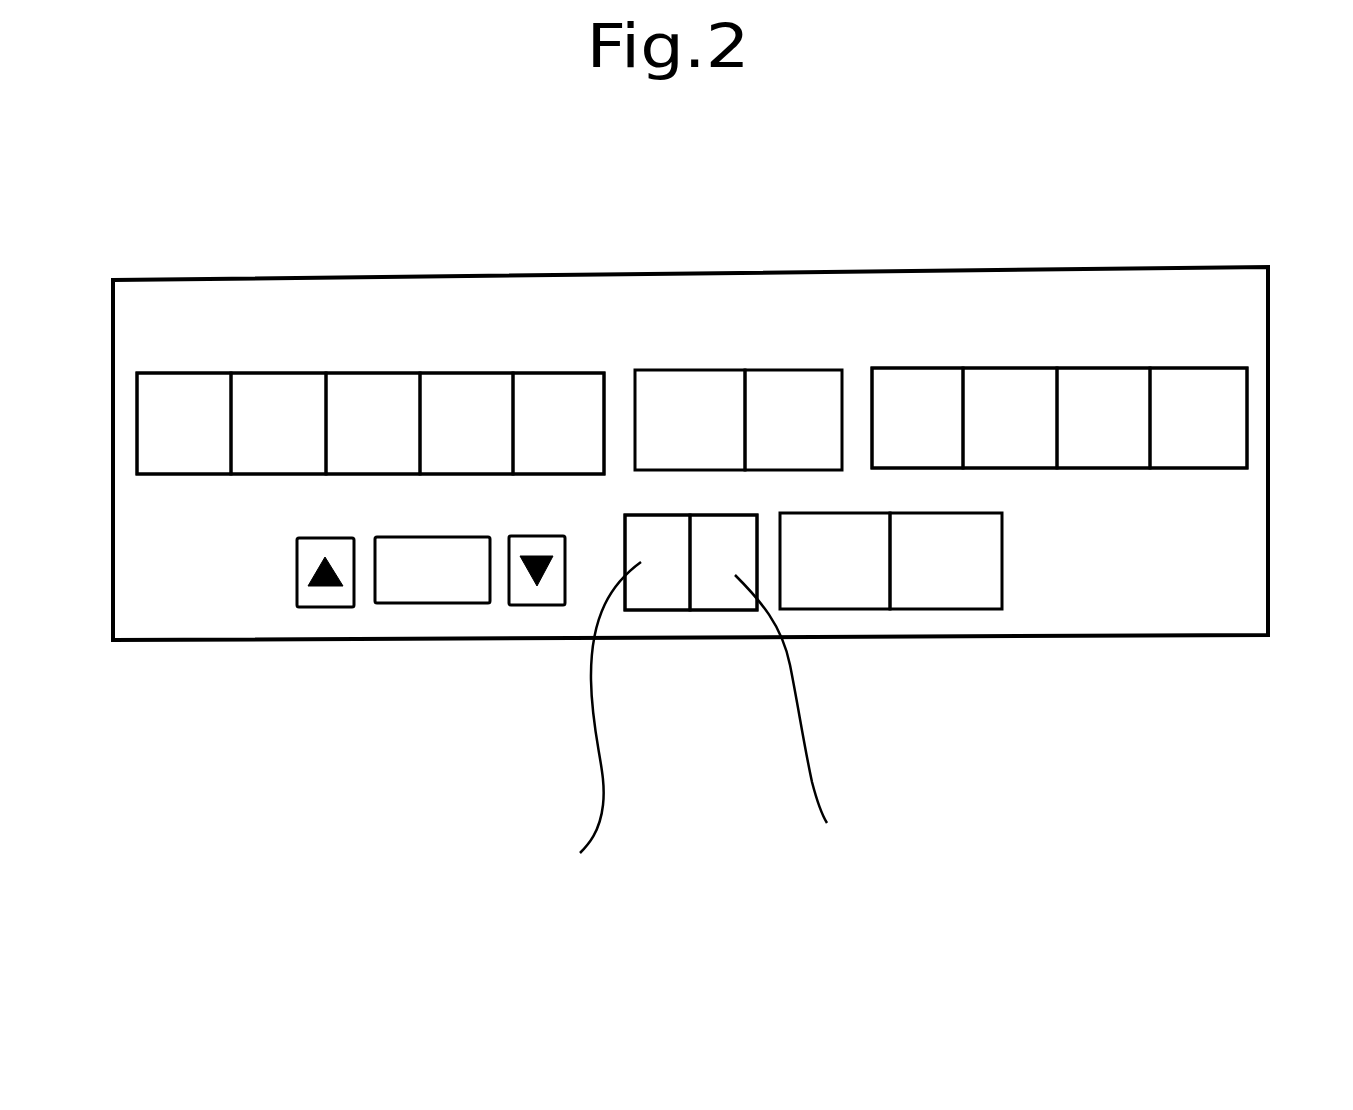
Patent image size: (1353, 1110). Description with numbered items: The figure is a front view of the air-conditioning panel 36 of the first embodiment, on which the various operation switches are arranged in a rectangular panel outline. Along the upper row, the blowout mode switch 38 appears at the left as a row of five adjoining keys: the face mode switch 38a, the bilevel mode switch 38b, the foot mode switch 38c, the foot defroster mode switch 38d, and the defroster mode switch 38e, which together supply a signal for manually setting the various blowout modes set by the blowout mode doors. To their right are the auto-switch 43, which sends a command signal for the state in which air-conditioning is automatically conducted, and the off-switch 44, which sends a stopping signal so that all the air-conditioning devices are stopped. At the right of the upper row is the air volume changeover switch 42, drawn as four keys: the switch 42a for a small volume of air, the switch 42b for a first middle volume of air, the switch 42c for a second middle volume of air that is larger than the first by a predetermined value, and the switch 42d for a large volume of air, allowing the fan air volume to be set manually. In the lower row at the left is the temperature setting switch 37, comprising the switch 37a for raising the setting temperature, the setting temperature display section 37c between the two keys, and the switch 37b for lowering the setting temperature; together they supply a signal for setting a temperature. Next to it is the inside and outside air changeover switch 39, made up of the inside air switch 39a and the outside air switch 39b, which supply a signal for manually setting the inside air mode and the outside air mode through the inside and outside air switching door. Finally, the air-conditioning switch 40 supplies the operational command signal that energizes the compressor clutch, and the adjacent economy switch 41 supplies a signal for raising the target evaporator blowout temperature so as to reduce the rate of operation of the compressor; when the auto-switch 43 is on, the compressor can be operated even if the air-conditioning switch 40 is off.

The air-conditioning panel 36 is at (1262, 258).
The temperature setting switch 37 is at (283, 708).
The switch for raising the setting temperature 37a is at (325, 607).
The switch for lowering the setting temperature 37b is at (537, 605).
The setting temperature display section 37c is at (430, 603).
The blowout mode switch 38 is at (143, 209).
The face mode switch 38a is at (186, 373).
The bilevel mode switch 38b is at (279, 373).
The foot mode switch 38c is at (372, 373).
The foot defroster mode switch 38d is at (465, 373).
The defroster mode switch 38e is at (557, 373).
The inside and outside air changeover switch 39 is at (780, 707).
The inside air switch 39a is at (655, 610).
The outside air switch 39b is at (725, 610).
The air-conditioning switch 40 is at (838, 609).
The economy switch 41 is at (945, 609).
The air volume changeover switch 42 is at (1236, 210).
The switch for a small volume of air 42a is at (920, 368).
The switch for a first middle volume of air 42b is at (1013, 368).
The switch for a second middle volume of air 42c is at (1105, 368).
The switch for a large volume of air 42d is at (1198, 368).
The auto-switch 43 is at (690, 370).
The off-switch 44 is at (790, 370).